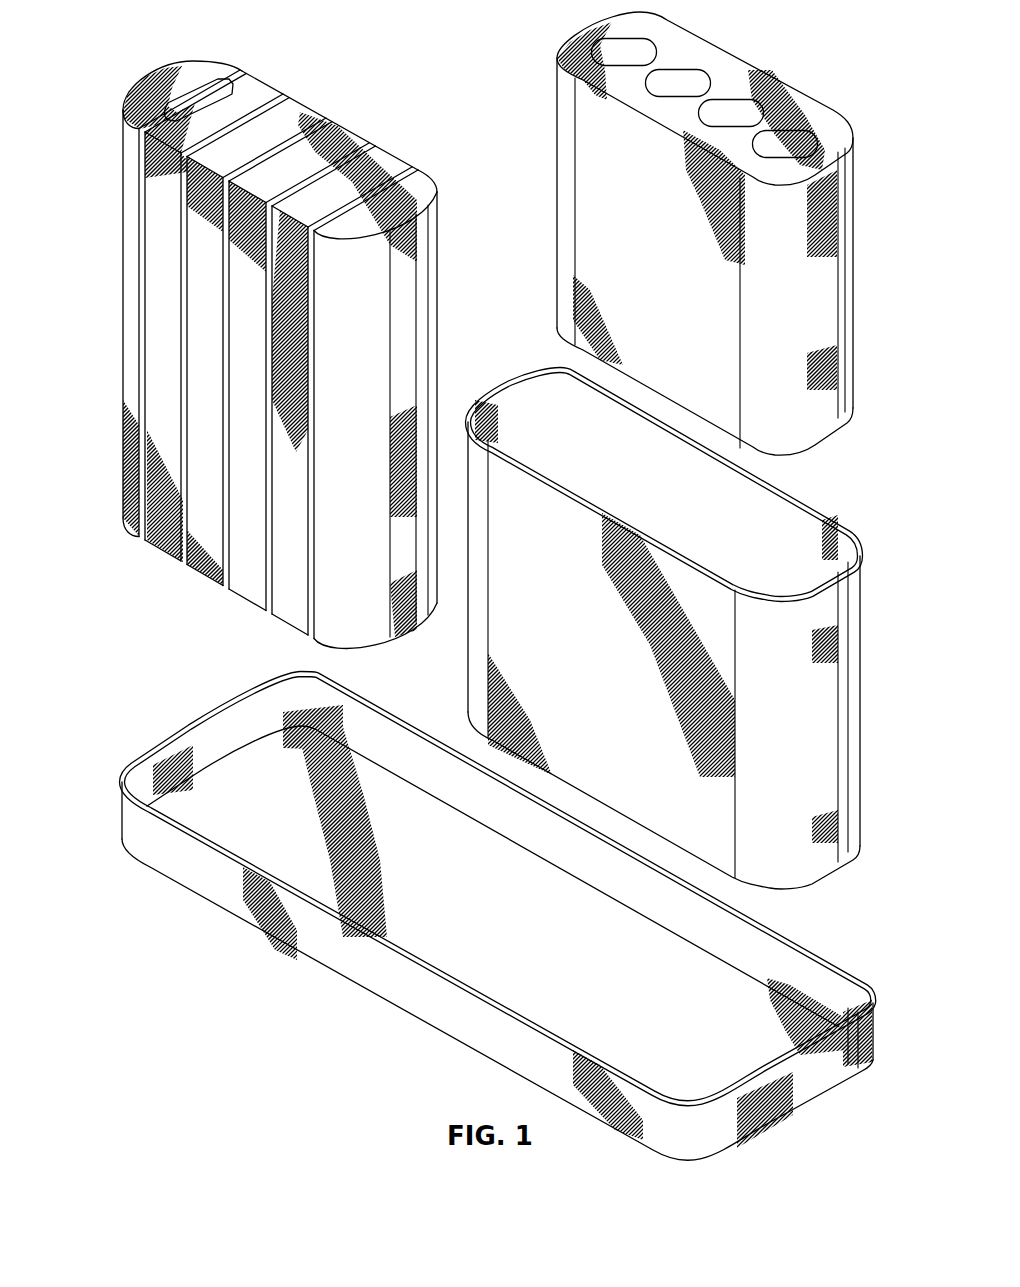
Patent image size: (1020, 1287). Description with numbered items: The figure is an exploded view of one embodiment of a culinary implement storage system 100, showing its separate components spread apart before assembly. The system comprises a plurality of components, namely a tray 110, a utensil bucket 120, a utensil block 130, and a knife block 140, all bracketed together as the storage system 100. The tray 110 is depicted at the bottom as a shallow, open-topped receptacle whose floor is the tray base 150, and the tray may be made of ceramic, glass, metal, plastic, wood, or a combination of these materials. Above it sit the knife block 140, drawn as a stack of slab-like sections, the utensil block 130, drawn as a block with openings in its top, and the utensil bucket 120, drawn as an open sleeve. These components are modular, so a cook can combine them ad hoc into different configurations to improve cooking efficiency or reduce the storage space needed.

The battery module 100 is at (905, 88).
The tray 110 is at (163, 726).
The utensil bucket 120 is at (503, 374).
The utensil block 130 is at (540, 132).
The knife block 140 is at (144, 72).
The tray base 150 is at (457, 897).